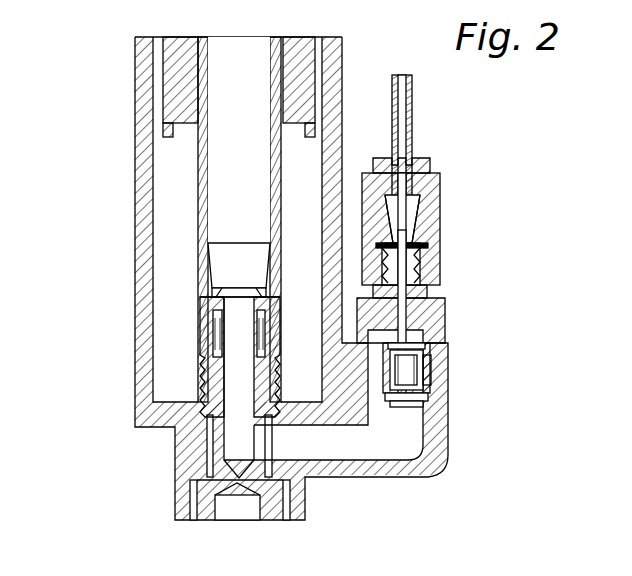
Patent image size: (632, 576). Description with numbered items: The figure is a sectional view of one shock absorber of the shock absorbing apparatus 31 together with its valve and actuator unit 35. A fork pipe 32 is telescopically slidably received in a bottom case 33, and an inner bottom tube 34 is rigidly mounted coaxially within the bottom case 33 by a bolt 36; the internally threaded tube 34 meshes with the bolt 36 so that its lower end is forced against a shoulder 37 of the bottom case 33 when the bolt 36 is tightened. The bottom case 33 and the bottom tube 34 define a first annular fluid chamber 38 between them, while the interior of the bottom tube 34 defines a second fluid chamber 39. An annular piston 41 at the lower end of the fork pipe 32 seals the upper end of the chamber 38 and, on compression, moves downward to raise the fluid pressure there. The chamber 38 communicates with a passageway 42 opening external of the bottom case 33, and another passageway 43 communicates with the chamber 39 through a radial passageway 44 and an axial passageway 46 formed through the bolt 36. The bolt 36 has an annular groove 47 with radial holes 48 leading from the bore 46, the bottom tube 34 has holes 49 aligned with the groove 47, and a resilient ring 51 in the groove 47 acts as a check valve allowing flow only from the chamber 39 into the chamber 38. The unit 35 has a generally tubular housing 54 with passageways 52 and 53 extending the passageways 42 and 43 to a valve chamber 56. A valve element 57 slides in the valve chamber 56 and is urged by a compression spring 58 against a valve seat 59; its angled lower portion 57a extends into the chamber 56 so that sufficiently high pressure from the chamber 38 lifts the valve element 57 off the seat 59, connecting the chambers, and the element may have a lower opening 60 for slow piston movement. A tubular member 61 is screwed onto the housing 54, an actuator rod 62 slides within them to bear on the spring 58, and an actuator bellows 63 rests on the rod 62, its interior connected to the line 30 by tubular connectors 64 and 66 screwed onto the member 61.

The line 30 is at (412, 100).
The shock absorbing apparatus 31 is at (128, 312).
The fork pipe 32 is at (163, 40).
The bottom case 33 is at (142, 180).
The inner bottom tube 34 is at (192, 150).
The valve and actuator unit 35 is at (500, 297).
The bolt 36 is at (205, 510).
The shoulder 37 is at (175, 432).
The first annular fluid chamber 38 is at (160, 250).
The second fluid chamber 39 is at (245, 62).
The annular piston 41 is at (178, 68).
The passageway 42 is at (370, 450).
The passageway 43 is at (330, 445).
The radial passageway 44 is at (238, 446).
The axial passageway 46 is at (205, 400).
The annular groove 47 is at (288, 300).
The radial holes 48 is at (237, 292).
The holes 49 is at (266, 320).
The resilient ring 51 is at (280, 340).
The passageway 52 is at (425, 470).
The passageway 53 is at (432, 475).
The tubular housing 54 is at (436, 392).
The valve chamber 56 is at (435, 372).
The valve element 57 is at (430, 345).
The lower portion 57a is at (440, 385).
The compression spring 58 is at (438, 352).
The valve seat 59 is at (440, 402).
The lower opening 60 is at (418, 420).
The tubular member 61 is at (428, 298).
The actuator rod 62 is at (445, 312).
The actuator bellows 63 is at (420, 262).
The tubular connector 64 is at (440, 175).
The tubular connector 66 is at (428, 158).